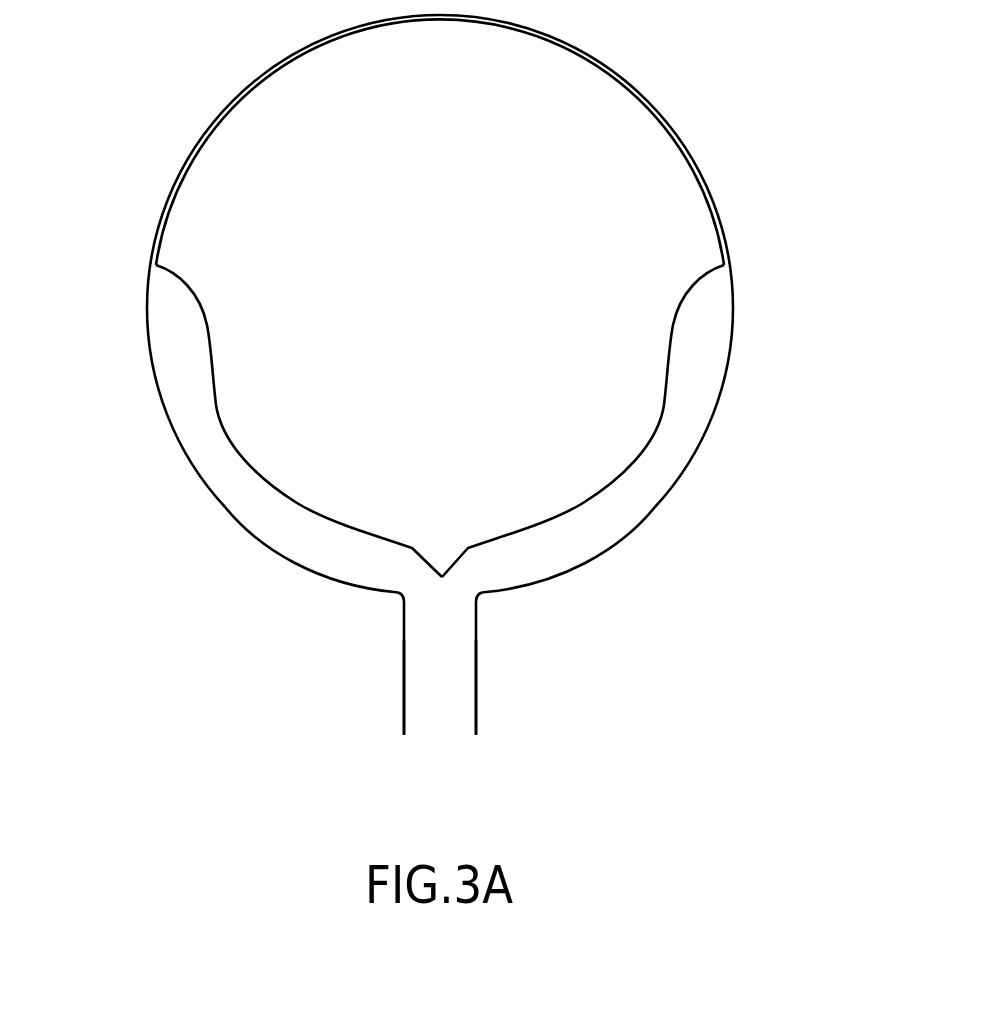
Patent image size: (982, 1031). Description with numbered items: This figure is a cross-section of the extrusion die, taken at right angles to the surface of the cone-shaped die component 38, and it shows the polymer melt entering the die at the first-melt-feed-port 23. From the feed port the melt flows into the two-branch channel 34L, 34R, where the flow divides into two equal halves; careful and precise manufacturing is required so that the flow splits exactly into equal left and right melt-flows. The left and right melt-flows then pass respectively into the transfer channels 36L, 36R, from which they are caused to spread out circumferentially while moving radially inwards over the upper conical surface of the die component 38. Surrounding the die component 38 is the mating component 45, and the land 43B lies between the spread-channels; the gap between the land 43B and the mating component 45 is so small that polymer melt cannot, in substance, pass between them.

The land 43B is at (378, 26).
The die component 38 is at (302, 160).
The mating component 45 is at (205, 102).
The left transfer channel 36L is at (163, 374).
The right transfer channel 36R is at (722, 307).
The left branch of two-branch channel 34L is at (273, 533).
The right branch of two-branch channel 34R is at (640, 493).
The first-melt-feed-port 23 is at (443, 725).